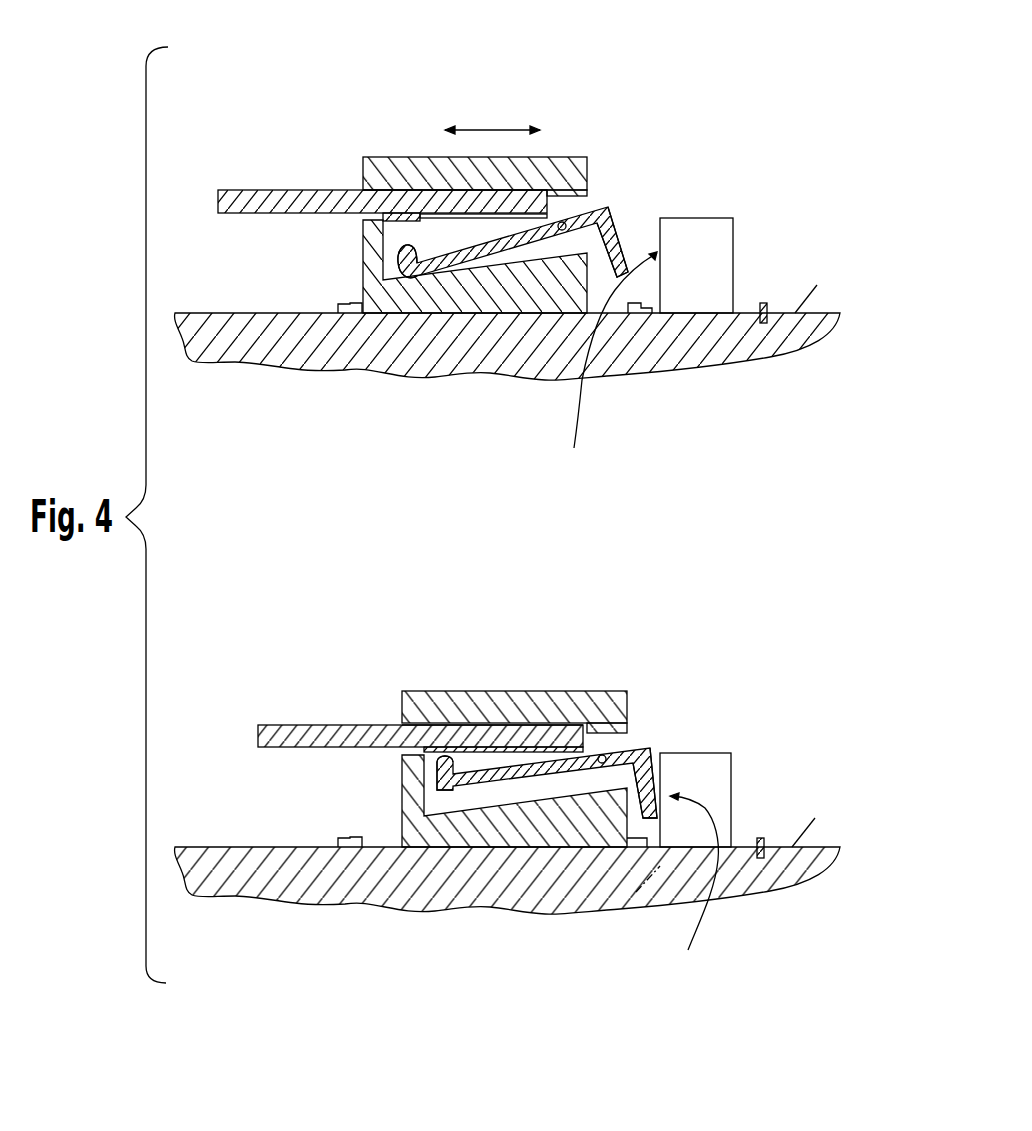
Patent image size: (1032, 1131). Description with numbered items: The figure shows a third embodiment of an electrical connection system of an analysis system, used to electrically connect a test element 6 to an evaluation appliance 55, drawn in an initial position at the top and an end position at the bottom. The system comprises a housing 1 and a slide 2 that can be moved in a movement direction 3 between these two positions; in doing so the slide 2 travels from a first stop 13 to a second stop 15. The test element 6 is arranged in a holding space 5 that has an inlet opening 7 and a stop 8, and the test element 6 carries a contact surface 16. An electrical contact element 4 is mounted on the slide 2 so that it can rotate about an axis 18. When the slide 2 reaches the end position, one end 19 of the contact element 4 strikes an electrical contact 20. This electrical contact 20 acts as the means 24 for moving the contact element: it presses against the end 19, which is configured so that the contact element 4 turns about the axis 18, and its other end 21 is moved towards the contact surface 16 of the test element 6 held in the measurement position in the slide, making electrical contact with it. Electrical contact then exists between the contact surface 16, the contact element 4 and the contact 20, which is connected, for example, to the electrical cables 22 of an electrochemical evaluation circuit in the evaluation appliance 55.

The housing 1 is at (610, 343).
The slide 2 is at (590, 160).
The movement direction 3 is at (495, 128).
The electrical contact element 4 is at (490, 257).
The holding space 5 is at (432, 175).
The test element 6 is at (270, 200).
The inlet opening 7 is at (353, 188).
The stop 8 is at (552, 192).
The first stop 13 is at (350, 302).
The second stop 15 is at (641, 290).
The contact surface 16 is at (398, 215).
The axis 18 is at (569, 222).
The end of the contact element 19 is at (617, 243).
The electrical contact 20 is at (700, 218).
The other end of the contact element 21 is at (398, 259).
The electrical cables 22 is at (785, 312).
The means for moving the contact element 24 is at (644, 618).
The evaluation appliance 55 is at (683, 90).